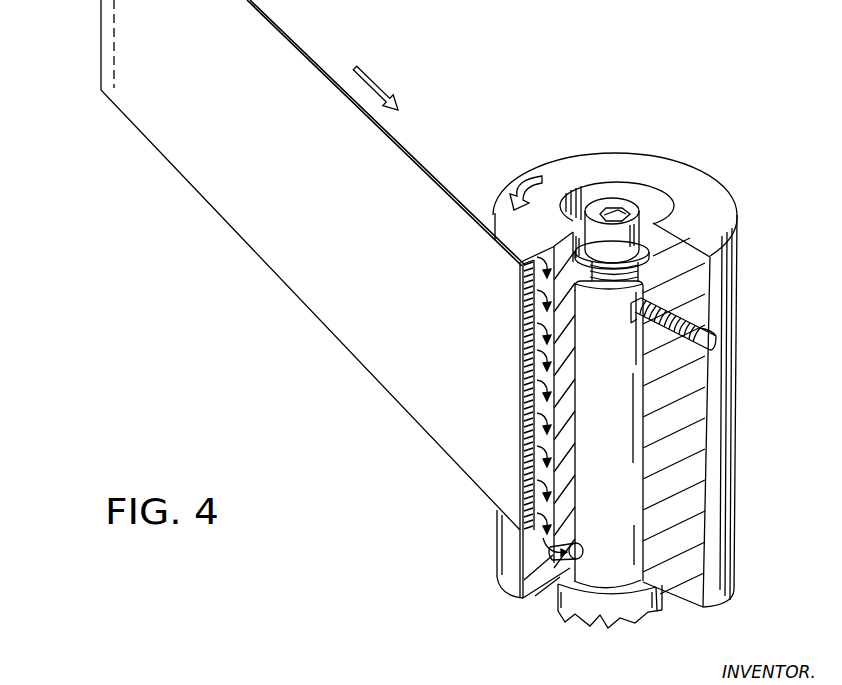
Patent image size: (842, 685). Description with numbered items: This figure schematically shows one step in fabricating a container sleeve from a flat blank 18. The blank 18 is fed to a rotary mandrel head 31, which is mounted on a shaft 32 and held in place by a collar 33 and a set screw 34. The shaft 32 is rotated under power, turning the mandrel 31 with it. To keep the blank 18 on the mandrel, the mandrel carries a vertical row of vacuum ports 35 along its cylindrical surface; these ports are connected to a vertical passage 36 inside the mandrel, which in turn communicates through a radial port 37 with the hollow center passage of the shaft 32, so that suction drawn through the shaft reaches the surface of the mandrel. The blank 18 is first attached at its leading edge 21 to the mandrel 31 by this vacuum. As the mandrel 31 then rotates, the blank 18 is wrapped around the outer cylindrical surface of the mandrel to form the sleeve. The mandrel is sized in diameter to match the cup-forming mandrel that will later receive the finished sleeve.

The blank 18 is at (313, 265).
The leading edge 21 is at (518, 397).
The rotary mandrel head 31 is at (685, 154).
The shaft 32 is at (623, 466).
The collar 33 is at (672, 213).
The set screw 34 is at (685, 322).
The vacuum ports 35 is at (536, 251).
The vertical passage 36 is at (575, 478).
The radial port 37 is at (580, 549).